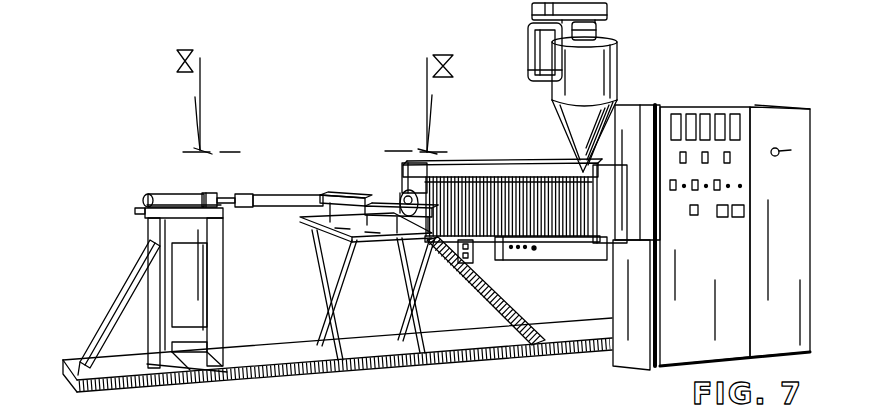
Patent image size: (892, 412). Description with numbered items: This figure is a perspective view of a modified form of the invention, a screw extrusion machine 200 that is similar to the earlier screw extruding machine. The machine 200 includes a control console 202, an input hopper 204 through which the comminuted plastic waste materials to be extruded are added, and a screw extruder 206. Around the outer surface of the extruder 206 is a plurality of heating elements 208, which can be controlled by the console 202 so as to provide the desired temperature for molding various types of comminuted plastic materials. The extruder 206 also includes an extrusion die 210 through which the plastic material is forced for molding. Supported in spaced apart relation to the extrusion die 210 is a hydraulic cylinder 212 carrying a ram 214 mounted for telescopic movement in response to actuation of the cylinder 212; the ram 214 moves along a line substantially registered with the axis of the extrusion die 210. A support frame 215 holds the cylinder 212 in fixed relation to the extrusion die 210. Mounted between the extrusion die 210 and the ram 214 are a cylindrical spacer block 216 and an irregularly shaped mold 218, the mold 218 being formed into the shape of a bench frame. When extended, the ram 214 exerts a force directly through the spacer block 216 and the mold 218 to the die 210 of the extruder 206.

The screw extrusion machine 200 is at (512, 58).
The control console 202 is at (712, 108).
The input hopper 204 is at (618, 49).
The screw extruder 206 is at (401, 168).
The heating elements 208 is at (523, 165).
The extrusion die 210 is at (400, 184).
The hydraulic cylinder 212 is at (167, 200).
The ram 214 is at (252, 196).
The support frame 215 is at (173, 238).
The cylindrical spacer block 216 is at (267, 196).
The mold 218 is at (335, 193).